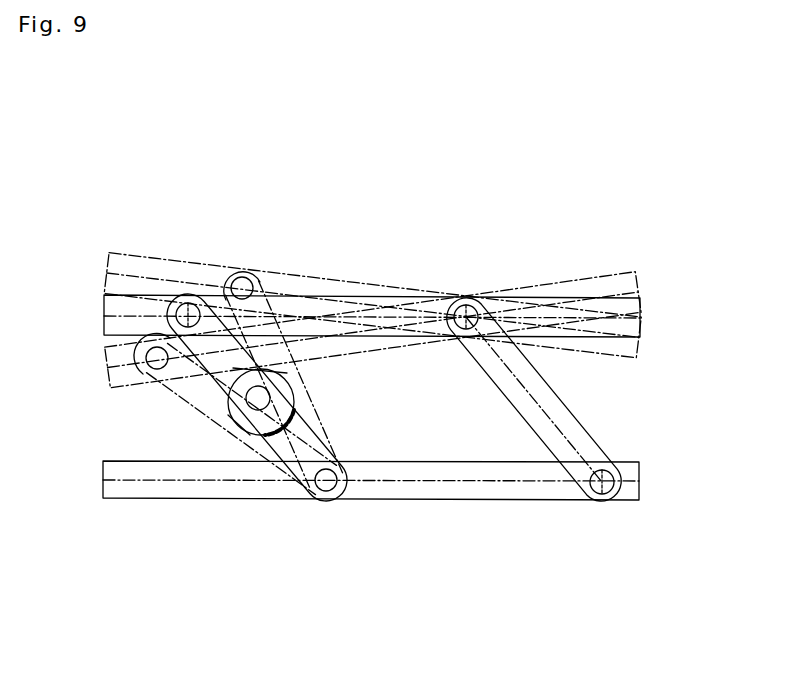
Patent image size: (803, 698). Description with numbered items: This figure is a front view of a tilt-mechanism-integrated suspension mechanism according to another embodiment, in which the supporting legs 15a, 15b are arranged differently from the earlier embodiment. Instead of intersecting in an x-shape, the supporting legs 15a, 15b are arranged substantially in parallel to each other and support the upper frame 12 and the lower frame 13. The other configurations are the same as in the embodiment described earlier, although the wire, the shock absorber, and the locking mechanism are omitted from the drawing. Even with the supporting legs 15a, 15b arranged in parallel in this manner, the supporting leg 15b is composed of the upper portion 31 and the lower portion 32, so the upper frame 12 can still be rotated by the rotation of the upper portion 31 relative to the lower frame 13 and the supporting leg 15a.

The upper frame 12 is at (557, 301).
The lower frame 13 is at (512, 495).
The upper portion 31 is at (210, 327).
The lower portion 32 is at (290, 447).
The supporting leg 15a is at (560, 423).
The supporting leg 15b is at (313, 405).